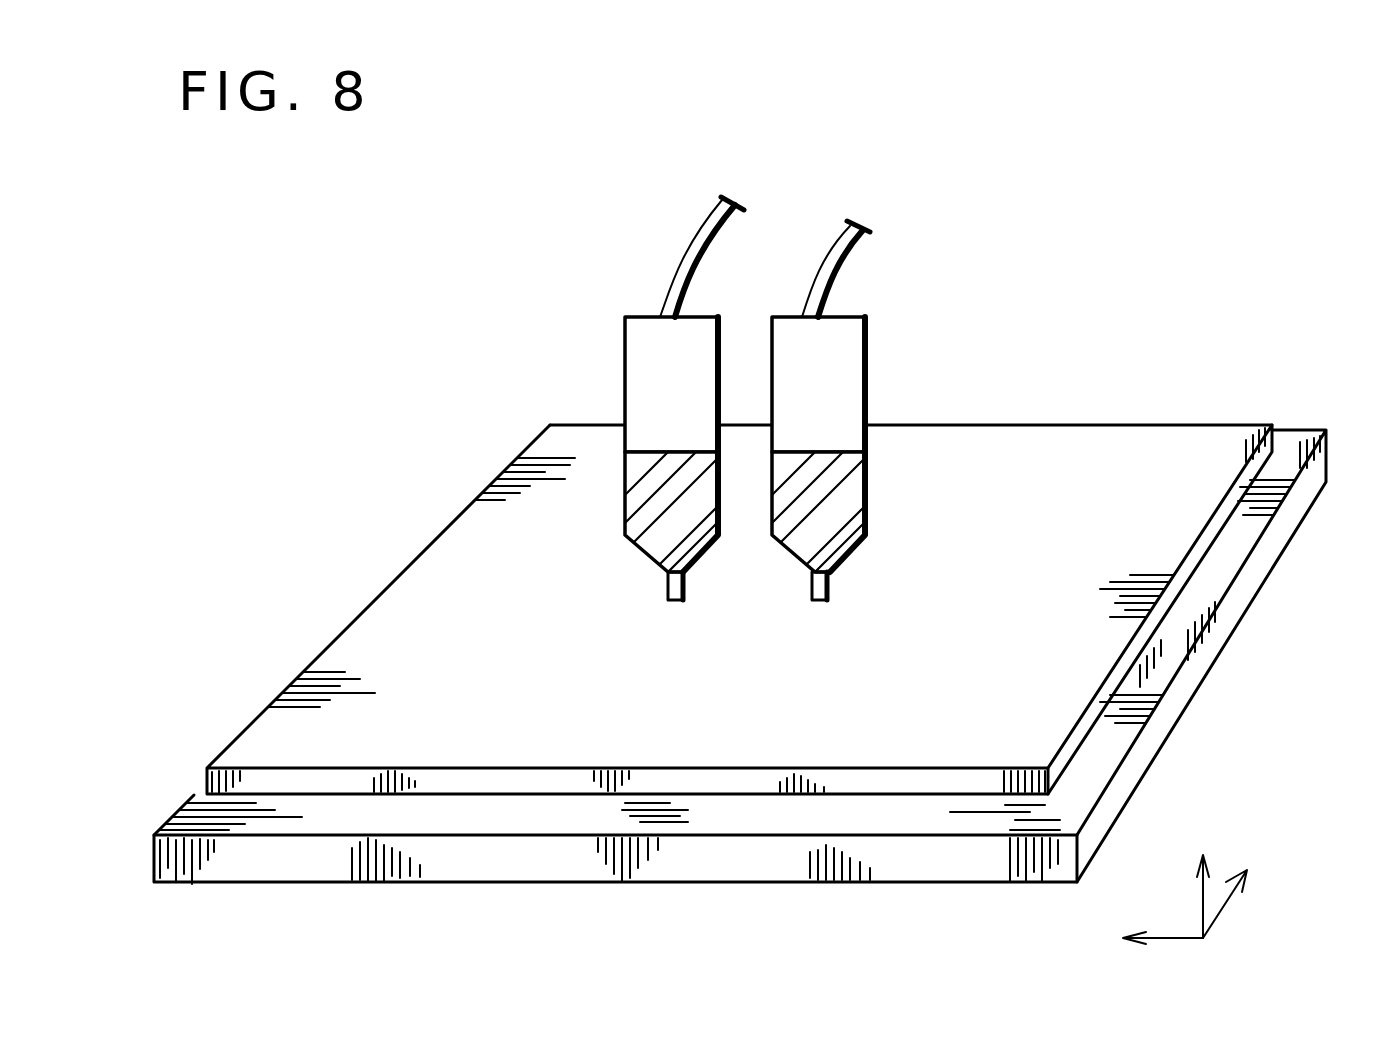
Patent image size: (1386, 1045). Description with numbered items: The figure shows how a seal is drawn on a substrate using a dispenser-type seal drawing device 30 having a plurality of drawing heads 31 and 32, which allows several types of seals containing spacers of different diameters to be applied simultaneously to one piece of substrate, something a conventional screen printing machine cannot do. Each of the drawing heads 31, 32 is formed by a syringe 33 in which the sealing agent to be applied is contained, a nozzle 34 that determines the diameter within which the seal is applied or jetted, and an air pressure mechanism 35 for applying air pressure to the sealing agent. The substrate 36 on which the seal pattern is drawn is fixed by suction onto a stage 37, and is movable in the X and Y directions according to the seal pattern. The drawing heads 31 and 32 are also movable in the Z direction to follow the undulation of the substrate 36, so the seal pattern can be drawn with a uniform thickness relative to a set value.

The seal drawing device 30 is at (1000, 287).
The drawing head 31 is at (643, 517).
The drawing head 32 is at (842, 508).
The syringe 33 is at (800, 347).
The nozzle 34 is at (817, 587).
The air pressure mechanism 35 is at (718, 248).
The substrate 36 is at (1153, 541).
The stage 37 is at (1148, 742).